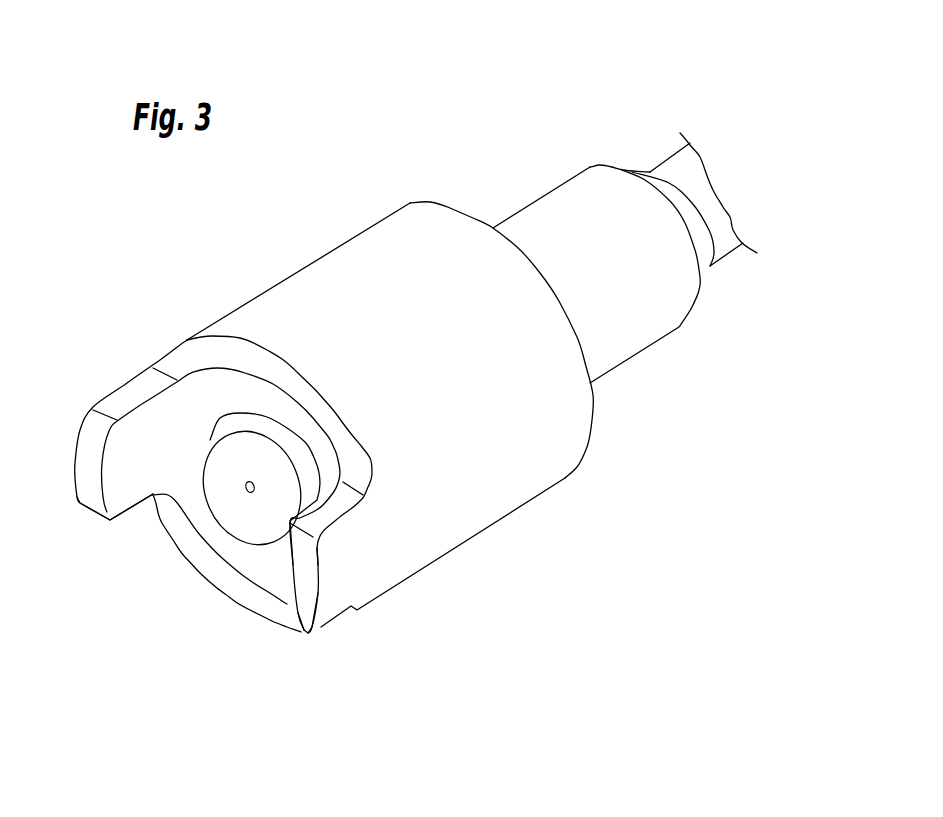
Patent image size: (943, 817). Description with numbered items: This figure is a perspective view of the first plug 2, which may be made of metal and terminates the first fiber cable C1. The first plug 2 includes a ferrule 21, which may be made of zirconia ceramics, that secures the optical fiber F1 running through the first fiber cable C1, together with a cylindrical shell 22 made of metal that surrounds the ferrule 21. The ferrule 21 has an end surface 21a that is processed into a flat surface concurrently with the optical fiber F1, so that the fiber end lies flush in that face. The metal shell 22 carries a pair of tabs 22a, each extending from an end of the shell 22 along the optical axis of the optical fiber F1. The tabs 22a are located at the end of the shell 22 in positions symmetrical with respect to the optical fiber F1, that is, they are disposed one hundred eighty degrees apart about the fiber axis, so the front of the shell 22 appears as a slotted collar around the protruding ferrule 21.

The first plug 2 is at (383, 61).
The cylindrical shell 22 is at (312, 261).
The tabs 22a is at (113, 478).
The ferrule 21 is at (220, 418).
The end surface 21a is at (260, 522).
The optical fiber F1 is at (250, 492).
The first fiber cable C1 is at (725, 237).